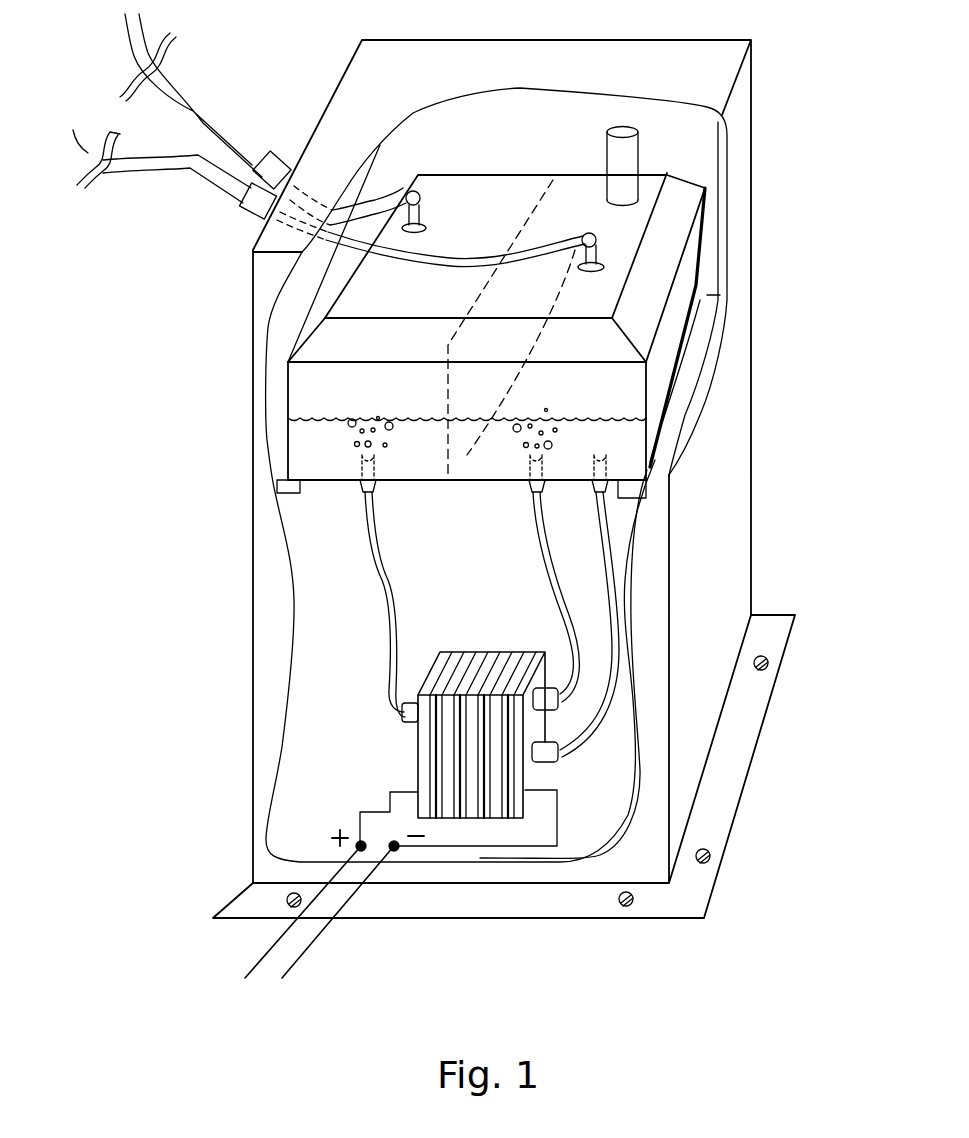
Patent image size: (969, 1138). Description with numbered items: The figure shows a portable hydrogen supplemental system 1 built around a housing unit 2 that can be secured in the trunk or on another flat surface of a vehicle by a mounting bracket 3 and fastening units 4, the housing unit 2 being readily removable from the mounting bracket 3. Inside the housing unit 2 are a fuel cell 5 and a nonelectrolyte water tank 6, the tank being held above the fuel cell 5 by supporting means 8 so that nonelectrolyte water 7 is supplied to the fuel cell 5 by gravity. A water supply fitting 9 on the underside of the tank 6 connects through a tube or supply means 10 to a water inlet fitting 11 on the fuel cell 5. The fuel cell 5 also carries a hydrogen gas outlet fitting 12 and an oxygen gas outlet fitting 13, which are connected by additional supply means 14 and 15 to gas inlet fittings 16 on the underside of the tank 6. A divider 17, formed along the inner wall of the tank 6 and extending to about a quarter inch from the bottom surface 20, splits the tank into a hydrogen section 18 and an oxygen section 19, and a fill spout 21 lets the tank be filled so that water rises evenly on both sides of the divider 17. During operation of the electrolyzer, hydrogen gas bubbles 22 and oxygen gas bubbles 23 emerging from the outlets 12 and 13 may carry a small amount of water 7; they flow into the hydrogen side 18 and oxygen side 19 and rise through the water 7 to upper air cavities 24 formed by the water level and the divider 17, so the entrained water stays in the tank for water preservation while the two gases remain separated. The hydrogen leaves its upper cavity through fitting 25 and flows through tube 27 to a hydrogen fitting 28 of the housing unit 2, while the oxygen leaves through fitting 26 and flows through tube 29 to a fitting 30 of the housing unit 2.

The portable hydrogen supplemental system 1 is at (700, 549).
The housing unit 2 is at (703, 615).
The mounting bracket 3 is at (692, 905).
The fastening units 4 is at (713, 847).
The fuel cell 5 is at (461, 664).
The nonelectrolyte water tank 6 is at (285, 405).
The nonelectrolyte water 7 is at (682, 352).
The supporting means 8 is at (663, 457).
The water supply fitting 9 is at (598, 487).
The supply means 10 is at (613, 587).
The water inlet fitting 11 is at (550, 757).
The hydrogen gas outlet fitting 12 is at (409, 722).
The oxygen gas outlet fitting 13 is at (558, 687).
The additional supply means 14 is at (387, 593).
The additional supply means 15 is at (550, 594).
The gas inlet fittings 16 is at (527, 487).
The divider 17 is at (475, 302).
The hydrogen section 18 is at (340, 342).
The oxygen section 19 is at (662, 277).
The bottom surface 20 is at (652, 433).
The fill spout 21 is at (638, 186).
The hydrogen gas bubbles 22 is at (360, 433).
The oxygen gas bubbles 23 is at (553, 433).
The upper air cavities 24 is at (550, 198).
The fitting 25 is at (416, 192).
The fitting 26 is at (606, 228).
The tube 27 is at (365, 200).
The hydrogen fitting 28 is at (287, 160).
The tube 29 is at (388, 252).
The fitting 30 is at (250, 210).